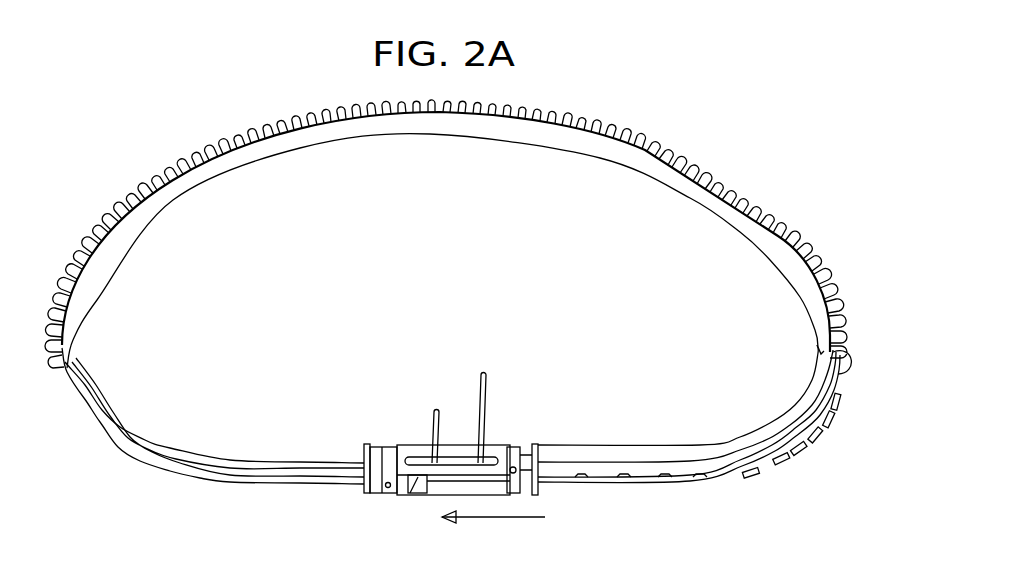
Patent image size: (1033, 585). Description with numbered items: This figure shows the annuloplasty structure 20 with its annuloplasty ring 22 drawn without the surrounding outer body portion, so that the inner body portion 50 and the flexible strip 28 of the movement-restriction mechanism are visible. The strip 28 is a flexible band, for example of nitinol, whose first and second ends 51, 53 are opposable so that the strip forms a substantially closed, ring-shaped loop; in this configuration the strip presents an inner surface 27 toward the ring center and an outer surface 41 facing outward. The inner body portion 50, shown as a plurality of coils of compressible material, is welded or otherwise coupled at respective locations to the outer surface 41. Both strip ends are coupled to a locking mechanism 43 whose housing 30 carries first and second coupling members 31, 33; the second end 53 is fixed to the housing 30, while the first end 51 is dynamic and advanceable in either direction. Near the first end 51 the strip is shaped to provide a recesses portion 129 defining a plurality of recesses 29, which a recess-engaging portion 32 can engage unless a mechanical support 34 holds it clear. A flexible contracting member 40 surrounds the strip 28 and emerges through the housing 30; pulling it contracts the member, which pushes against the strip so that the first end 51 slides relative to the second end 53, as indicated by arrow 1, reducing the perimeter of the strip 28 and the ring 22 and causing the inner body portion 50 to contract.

The arrow 1 is at (473, 522).
The annuloplasty structure 20 is at (198, 83).
The annuloplasty ring 22 is at (126, 170).
The inner surface 27 is at (372, 120).
The flexible strip 28 is at (190, 457).
The recesses 29 is at (770, 468).
The housing 30 is at (500, 448).
The first coupling member 31 is at (519, 496).
The recess-engaging portion 32 is at (425, 495).
The second coupling member 33 is at (378, 496).
The mechanical support 34 is at (482, 378).
The flexible contracting member 40 is at (86, 412).
The outer surface 41 is at (83, 392).
The locking mechanism 43 is at (363, 362).
The inner body portion 50 is at (78, 249).
The first end 51 is at (546, 494).
The second end 53 is at (354, 442).
The recesses portion 129 is at (728, 443).